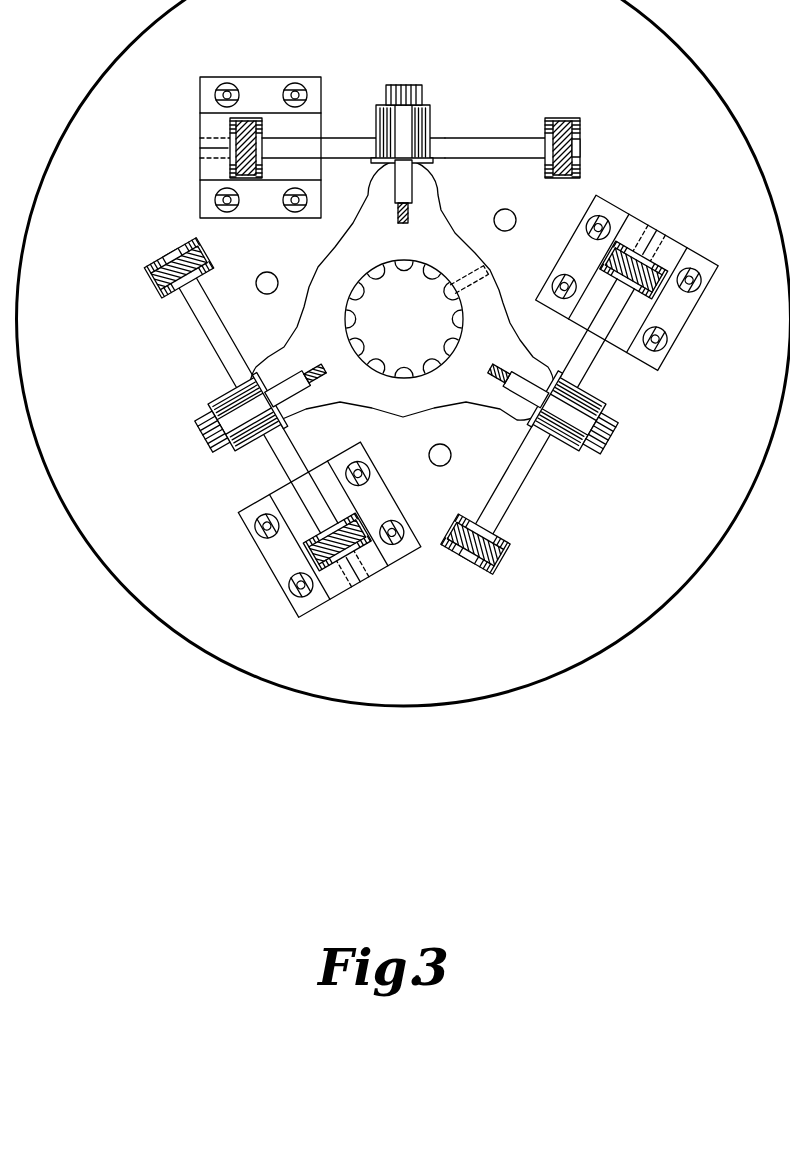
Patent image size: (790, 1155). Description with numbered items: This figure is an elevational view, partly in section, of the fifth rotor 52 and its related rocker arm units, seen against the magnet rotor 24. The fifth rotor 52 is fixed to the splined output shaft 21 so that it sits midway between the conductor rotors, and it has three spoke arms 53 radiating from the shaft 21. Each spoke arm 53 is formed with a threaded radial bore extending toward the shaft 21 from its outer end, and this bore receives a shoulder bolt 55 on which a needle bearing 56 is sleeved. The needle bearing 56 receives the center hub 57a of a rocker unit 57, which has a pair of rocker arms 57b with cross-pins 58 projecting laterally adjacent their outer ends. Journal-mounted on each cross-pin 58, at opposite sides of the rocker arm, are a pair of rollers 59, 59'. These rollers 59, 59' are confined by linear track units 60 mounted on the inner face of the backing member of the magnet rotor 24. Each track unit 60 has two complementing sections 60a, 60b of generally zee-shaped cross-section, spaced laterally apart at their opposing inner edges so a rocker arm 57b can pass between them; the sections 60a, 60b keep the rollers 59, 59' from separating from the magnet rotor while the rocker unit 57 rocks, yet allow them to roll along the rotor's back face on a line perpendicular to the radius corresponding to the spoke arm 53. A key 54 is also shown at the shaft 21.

The splined output shaft 21 is at (418, 331).
The magnet rotor 24 is at (135, 555).
The fifth rotor 52 is at (310, 276).
The spoke arms 53 is at (432, 192).
The key 54 is at (496, 270).
The shoulder bolts 55 is at (397, 84).
The needle bearings 56 is at (432, 110).
The rocker units 57 is at (518, 110).
The center hubs 57a is at (435, 133).
The rocker arms 57b is at (515, 155).
The cross-pins 58 is at (155, 278).
The roller 59 is at (589, 132).
The roller 59' is at (603, 148).
The linear track units 60 is at (194, 157).
The track unit section 60a is at (267, 80).
The track unit section 60b is at (263, 207).